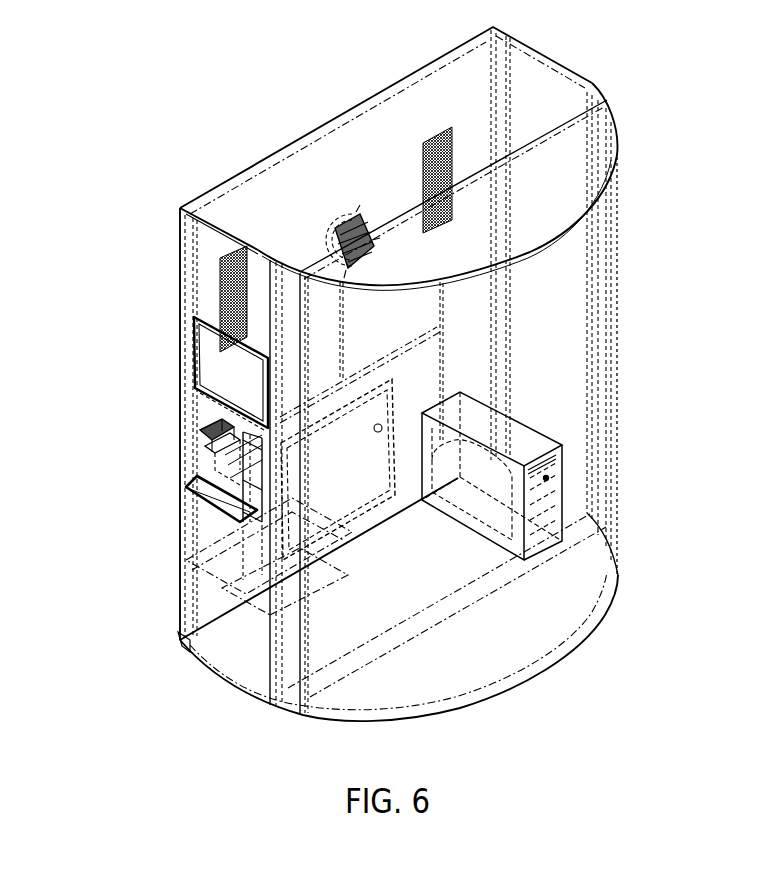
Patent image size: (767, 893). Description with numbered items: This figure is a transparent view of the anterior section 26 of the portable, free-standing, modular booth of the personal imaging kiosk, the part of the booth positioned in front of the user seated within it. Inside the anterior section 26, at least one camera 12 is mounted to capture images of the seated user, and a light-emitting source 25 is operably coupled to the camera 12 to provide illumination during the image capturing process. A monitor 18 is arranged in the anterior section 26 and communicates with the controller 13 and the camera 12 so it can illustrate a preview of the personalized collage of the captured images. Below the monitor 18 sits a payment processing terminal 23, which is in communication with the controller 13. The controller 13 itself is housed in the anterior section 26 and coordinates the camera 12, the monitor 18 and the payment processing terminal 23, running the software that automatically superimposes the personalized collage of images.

The anterior section 26 is at (640, 138).
The light-emitting source 25 is at (440, 183).
The camera 12 is at (342, 233).
The monitor 18 is at (208, 382).
The payment processing terminal 23 is at (201, 457).
The controller 13 is at (523, 442).